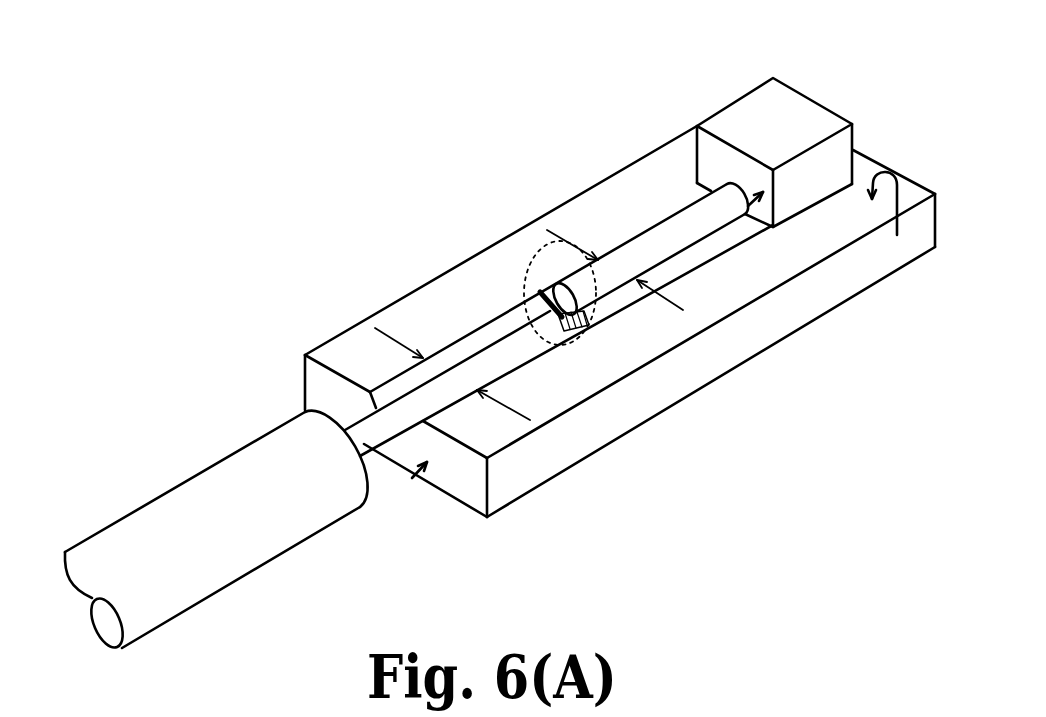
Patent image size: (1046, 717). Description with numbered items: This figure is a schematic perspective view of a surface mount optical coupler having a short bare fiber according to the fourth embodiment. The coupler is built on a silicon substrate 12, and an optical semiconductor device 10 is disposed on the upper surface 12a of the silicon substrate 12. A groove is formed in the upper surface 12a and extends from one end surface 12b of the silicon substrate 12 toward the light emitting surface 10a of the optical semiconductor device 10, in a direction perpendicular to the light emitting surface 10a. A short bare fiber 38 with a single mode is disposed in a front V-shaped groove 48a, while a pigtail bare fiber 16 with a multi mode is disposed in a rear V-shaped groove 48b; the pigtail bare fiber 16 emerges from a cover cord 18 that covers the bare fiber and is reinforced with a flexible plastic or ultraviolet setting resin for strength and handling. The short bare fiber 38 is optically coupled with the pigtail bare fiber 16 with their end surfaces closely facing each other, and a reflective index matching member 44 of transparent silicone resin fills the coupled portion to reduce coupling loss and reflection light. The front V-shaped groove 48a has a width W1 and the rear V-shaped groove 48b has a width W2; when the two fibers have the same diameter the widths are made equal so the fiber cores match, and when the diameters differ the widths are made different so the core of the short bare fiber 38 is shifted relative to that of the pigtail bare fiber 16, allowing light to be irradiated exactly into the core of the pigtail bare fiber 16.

The optical semiconductor device 10 is at (792, 118).
The light emitting surface 10a is at (745, 212).
The silicon substrate 12 is at (733, 343).
The upper surface 12a is at (897, 235).
The end surface 12b is at (412, 478).
The pigtail bare fiber 16 is at (453, 370).
The cover cord 18 is at (180, 505).
The short bare fiber 38 is at (669, 228).
The reflective index matching member 44 is at (550, 273).
The front V-shaped groove 48a is at (619, 283).
The rear V-shaped groove 48b is at (523, 363).
The width of front V-shaped groove W1 is at (620, 252).
The width of rear V-shaped groove W2 is at (405, 320).